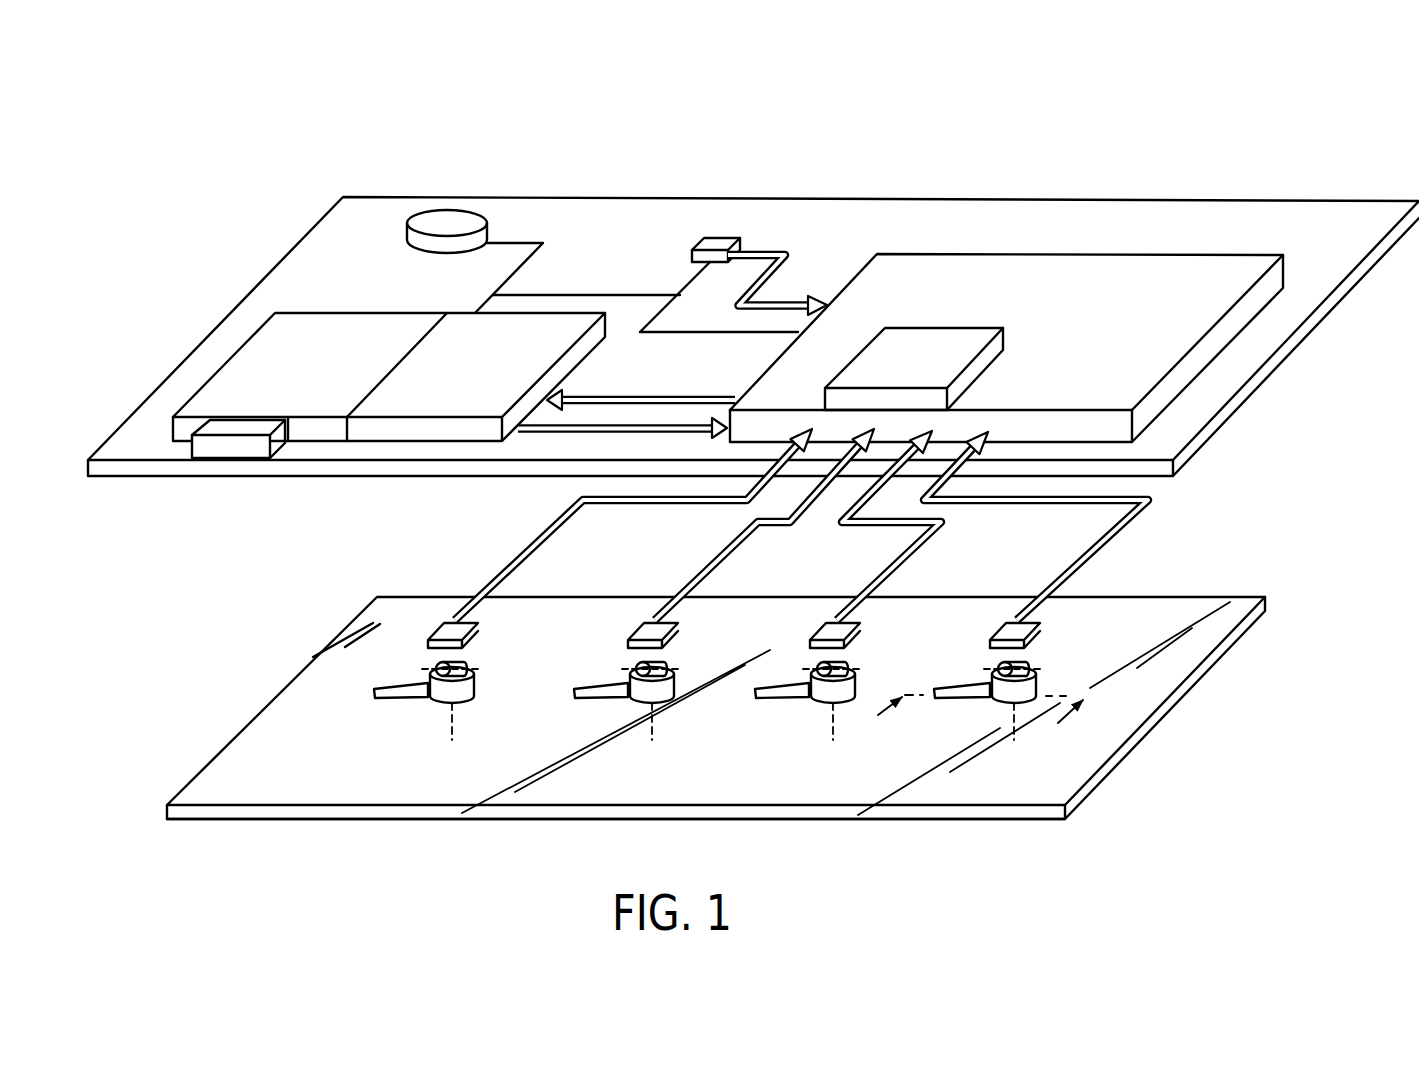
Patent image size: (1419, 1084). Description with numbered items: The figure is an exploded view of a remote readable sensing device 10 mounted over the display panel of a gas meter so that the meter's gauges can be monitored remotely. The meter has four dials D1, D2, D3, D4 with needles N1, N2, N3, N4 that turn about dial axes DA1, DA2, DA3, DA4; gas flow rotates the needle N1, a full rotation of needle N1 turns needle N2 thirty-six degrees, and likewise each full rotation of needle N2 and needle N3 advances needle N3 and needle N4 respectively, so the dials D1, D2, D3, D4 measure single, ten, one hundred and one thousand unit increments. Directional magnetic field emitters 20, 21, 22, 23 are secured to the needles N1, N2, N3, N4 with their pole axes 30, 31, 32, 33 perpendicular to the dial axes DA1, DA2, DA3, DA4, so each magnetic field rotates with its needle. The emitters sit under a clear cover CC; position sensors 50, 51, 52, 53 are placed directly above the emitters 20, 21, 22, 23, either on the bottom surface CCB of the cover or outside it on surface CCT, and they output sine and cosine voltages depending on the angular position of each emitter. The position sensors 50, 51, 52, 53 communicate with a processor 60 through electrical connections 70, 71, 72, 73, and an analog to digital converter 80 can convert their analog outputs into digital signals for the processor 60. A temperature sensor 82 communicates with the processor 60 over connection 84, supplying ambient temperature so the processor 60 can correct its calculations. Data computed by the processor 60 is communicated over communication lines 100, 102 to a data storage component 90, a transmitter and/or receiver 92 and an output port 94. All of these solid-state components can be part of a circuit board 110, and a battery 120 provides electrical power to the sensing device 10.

The remote readable sensing device 10 is at (1212, 140).
The circuit board 110 is at (1280, 225).
The battery 120 is at (440, 215).
The data storage component 90 is at (540, 327).
The transmitter and/or receiver 92 is at (332, 333).
The output port 94 is at (213, 445).
The communication line 100 is at (660, 394).
The communication line 102 is at (600, 423).
The temperature sensor 82 is at (720, 238).
The connection 84 is at (771, 250).
The processor 60 is at (1092, 283).
The analog to digital converter 80 is at (945, 338).
The electrical connection 70 is at (1145, 515).
The electrical connection 71 is at (937, 545).
The electrical connection 72 is at (737, 537).
The electrical connection 73 is at (553, 521).
The position sensor 50 is at (1010, 628).
The position sensor 51 is at (830, 628).
The position sensor 52 is at (647, 627).
The position sensor 53 is at (450, 628).
The directional magnetic field emitter 20 is at (1027, 660).
The directional magnetic field emitter 21 is at (840, 660).
The directional magnetic field emitter 22 is at (655, 660).
The directional magnetic field emitter 23 is at (453, 665).
The pole axis 30 is at (1043, 668).
The pole axis 31 is at (858, 670).
The pole axis 32 is at (678, 668).
The pole axis 33 is at (477, 670).
The clear cover CC is at (749, 710).
The surface of clear cover CCT is at (335, 662).
The carrier bottom surface CCB is at (250, 818).
The dial D1 is at (993, 737).
The dial D2 is at (808, 736).
The dial D3 is at (618, 736).
The dial D4 is at (421, 731).
The first dial axis DA1 is at (1015, 733).
The second dial axis DA2 is at (835, 733).
The dial axis DA3 is at (650, 733).
The dial axis DA4 is at (450, 732).
The needle N1 is at (955, 702).
The needle N2 is at (773, 700).
The needle N3 is at (590, 700).
The needle N4 is at (385, 700).